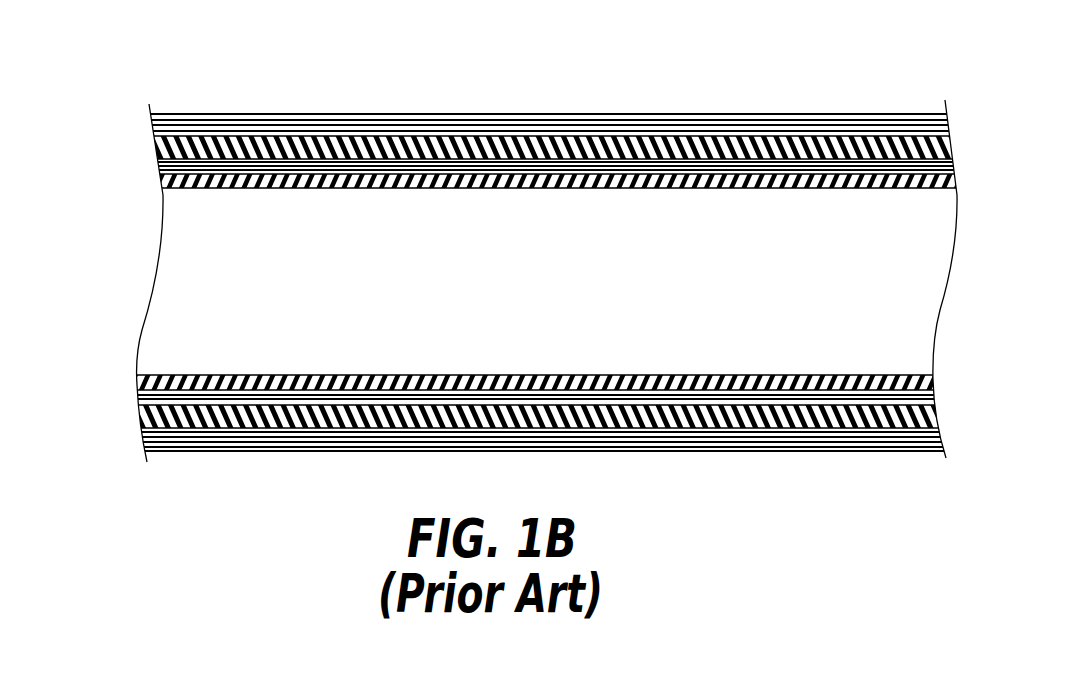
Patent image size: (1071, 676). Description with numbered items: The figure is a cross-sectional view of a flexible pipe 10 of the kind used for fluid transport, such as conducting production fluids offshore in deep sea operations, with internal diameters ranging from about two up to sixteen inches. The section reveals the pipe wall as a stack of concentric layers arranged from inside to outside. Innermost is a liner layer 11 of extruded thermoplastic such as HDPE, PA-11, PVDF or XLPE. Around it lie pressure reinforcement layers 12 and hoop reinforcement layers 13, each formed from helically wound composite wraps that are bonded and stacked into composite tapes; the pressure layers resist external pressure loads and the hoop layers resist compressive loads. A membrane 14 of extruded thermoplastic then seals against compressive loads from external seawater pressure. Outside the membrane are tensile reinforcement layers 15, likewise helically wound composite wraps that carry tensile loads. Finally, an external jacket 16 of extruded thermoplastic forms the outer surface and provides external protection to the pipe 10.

The flexible pipe 10 is at (530, 92).
The liner layer 11 is at (233, 377).
The pressure reinforcement layers 12 is at (140, 398).
The hoop reinforcement layers 13 is at (140, 416).
The membrane 14 is at (138, 432).
The tensile reinforcement layers 15 is at (167, 442).
The external jacket 16 is at (195, 452).